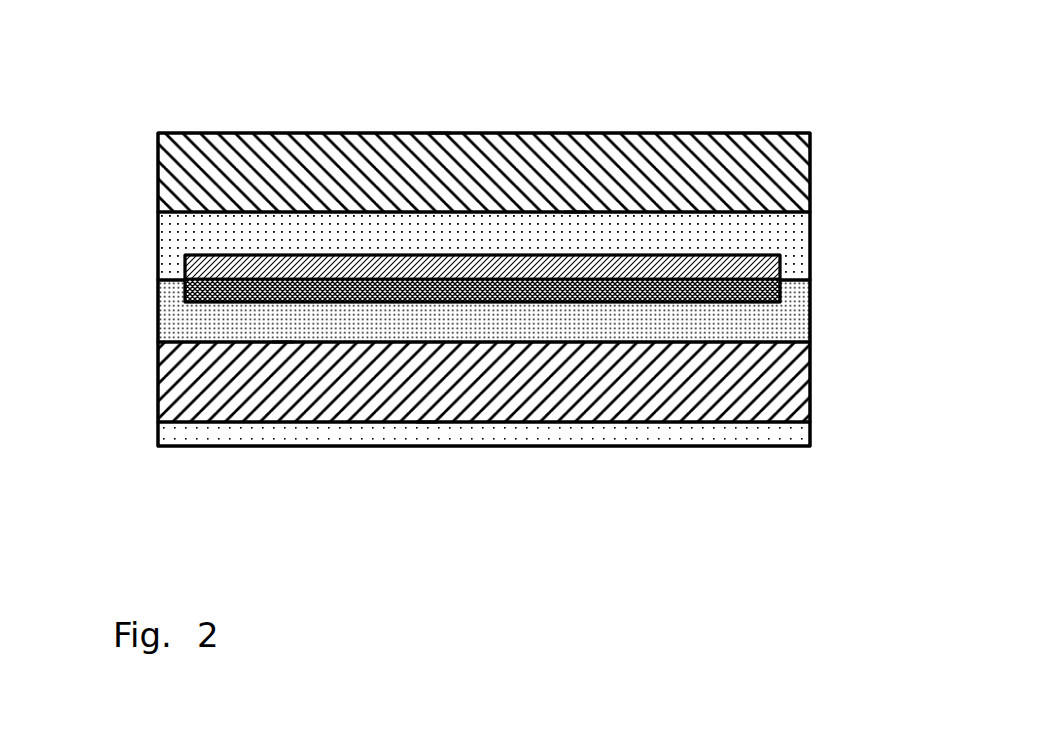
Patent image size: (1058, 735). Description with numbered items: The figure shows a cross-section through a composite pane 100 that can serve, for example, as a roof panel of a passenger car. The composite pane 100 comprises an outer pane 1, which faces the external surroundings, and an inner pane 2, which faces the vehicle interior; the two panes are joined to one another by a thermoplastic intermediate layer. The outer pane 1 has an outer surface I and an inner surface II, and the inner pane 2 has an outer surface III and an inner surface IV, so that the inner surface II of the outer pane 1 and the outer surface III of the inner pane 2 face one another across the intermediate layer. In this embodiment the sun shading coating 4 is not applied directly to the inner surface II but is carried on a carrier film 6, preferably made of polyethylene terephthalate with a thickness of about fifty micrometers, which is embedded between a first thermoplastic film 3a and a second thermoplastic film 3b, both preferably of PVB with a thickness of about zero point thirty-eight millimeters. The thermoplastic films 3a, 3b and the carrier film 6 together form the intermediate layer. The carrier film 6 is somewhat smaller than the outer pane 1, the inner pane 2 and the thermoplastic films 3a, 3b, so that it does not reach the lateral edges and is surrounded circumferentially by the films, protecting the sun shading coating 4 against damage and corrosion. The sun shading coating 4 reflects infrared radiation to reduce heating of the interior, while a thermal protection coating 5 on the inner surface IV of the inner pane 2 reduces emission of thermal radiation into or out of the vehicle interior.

The composite pane 100 is at (455, 376).
The outer pane 1 is at (180, 175).
The inner pane 2 is at (180, 381).
The first thermoplastic film 3a is at (185, 246).
The second thermoplastic film 3b is at (184, 322).
The sun shading coating 4 is at (778, 265).
The thermal protection coating 5 is at (580, 433).
The carrier film 6 is at (768, 295).
The outer surface of the outer pane I is at (440, 120).
The inner surface of the outer pane II is at (574, 195).
The outer surface of the inner pane III is at (282, 359).
The inner surface of the inner pane IV is at (427, 437).